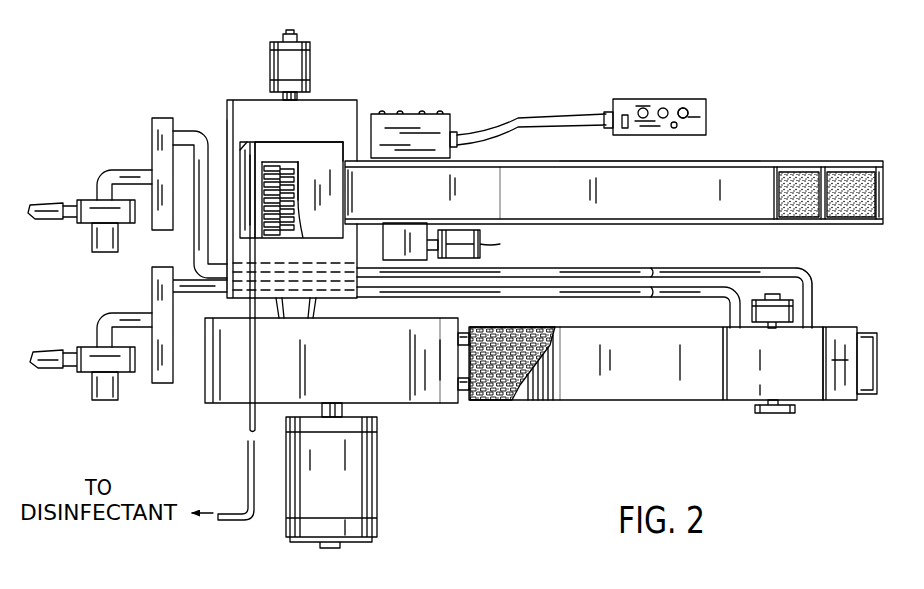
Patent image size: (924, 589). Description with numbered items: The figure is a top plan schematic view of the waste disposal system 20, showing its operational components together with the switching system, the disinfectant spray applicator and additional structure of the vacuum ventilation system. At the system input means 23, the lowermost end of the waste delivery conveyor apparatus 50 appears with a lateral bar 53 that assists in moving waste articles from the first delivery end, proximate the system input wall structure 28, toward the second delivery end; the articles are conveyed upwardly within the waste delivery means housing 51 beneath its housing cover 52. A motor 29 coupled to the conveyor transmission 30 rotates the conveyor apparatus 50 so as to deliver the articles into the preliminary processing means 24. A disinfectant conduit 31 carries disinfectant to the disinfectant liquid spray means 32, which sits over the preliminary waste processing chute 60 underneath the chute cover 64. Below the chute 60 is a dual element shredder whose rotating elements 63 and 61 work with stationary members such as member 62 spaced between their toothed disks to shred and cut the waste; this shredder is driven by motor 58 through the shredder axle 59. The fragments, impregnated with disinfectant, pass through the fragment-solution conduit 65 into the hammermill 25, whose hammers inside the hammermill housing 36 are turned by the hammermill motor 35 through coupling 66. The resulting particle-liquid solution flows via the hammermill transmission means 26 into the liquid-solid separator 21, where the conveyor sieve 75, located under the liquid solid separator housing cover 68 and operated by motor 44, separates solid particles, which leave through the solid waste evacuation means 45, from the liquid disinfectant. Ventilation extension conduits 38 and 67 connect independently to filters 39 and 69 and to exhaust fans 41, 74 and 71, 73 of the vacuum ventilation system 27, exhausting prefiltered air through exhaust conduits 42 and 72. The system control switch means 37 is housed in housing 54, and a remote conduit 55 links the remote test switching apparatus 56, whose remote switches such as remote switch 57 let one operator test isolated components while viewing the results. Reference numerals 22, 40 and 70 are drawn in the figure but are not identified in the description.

The waste disposal system 20 is at (205, 113).
The liquid-solid separator 21 is at (685, 403).
The upper tubular chamber 22 is at (691, 194).
The system input means 23 is at (856, 168).
The preliminary processing means 24 is at (359, 101).
The hammermill 25 is at (443, 408).
The hammermill transmission means 26 is at (465, 393).
The vacuum ventilation system 27 is at (95, 314).
The system input wall structure 28 is at (808, 165).
The motor 29 is at (483, 246).
The conveyor transmission 30 is at (413, 243).
The disinfectant conduit 31 is at (248, 416).
The disinfectant liquid spray means 32 is at (288, 153).
The hammermill motor 35 is at (333, 497).
The hammermill housing 36 is at (422, 406).
The system control switch means 37 is at (452, 118).
The ventilation extension conduit 38 is at (693, 297).
The filter 39 is at (162, 383).
The tube 40 is at (102, 336).
The exhaust fan 41 is at (100, 360).
The exhaust conduit 42 is at (50, 360).
The motor 44 is at (789, 309).
The solid waste evacuation means 45 is at (842, 374).
The waste delivery conveyor apparatus 50 is at (879, 196).
The waste delivery means housing 51 is at (653, 160).
The housing cover 52 is at (538, 182).
The lateral bar 53 is at (819, 200).
The housing 54 is at (408, 137).
The remote conduit 55 is at (533, 118).
The remote test switching apparatus 56 is at (642, 96).
The remote switch 57 is at (698, 113).
The motor 58 is at (297, 53).
The shredder axle 59 is at (288, 92).
The preliminary waste processing chute 60 is at (253, 154).
The rotating element 61 is at (272, 197).
The stationary member 62 is at (265, 213).
The rotating element 63 is at (300, 172).
The chute cover 64 is at (330, 196).
The fragment-solution conduit 65 is at (297, 310).
The coupling 66 is at (345, 408).
The ventilation extension conduit 67 is at (812, 312).
The liquid solid separator housing cover 68 is at (592, 377).
The filter 69 is at (158, 133).
The tube 70 is at (107, 187).
The exhaust fan 71 is at (90, 218).
The exhaust conduit 72 is at (42, 200).
The exhaust fan 73 is at (110, 244).
The exhaust fan 74 is at (100, 400).
The conveyor sieve 75 is at (508, 380).